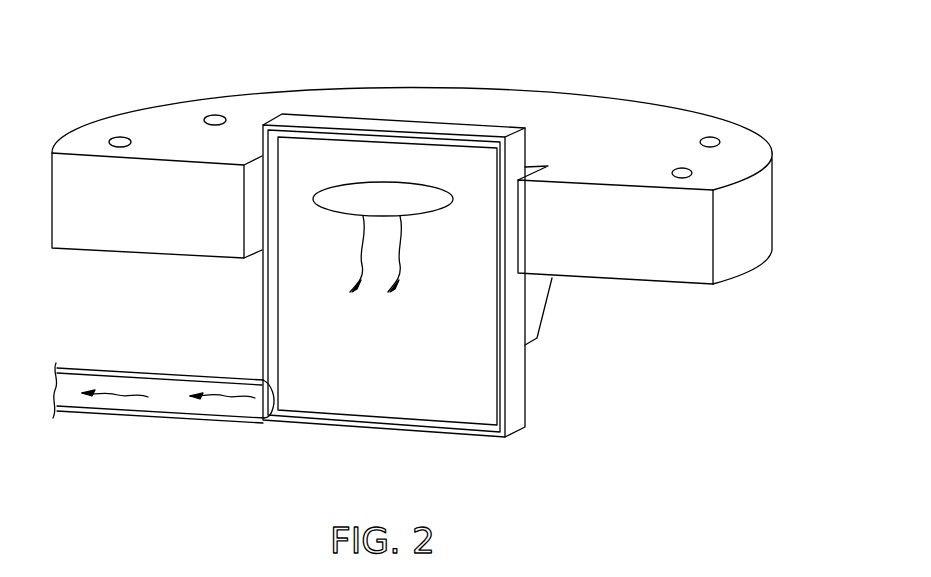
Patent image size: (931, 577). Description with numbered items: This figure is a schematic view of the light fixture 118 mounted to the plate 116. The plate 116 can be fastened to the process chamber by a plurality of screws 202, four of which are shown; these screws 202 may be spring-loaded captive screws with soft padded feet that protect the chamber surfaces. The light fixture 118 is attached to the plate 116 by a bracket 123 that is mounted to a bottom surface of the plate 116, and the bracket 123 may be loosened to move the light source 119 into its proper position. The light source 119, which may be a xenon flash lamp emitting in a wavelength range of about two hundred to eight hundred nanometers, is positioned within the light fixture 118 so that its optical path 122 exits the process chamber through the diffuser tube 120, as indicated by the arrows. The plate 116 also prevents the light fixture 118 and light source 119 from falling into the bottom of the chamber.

The plate 116 is at (498, 107).
The screws 202 is at (213, 115).
The light fixture 118 is at (470, 356).
The bracket 123 is at (536, 292).
The light source 119 is at (354, 181).
The optical path 122 is at (410, 272).
The diffuser tube 120 is at (131, 413).